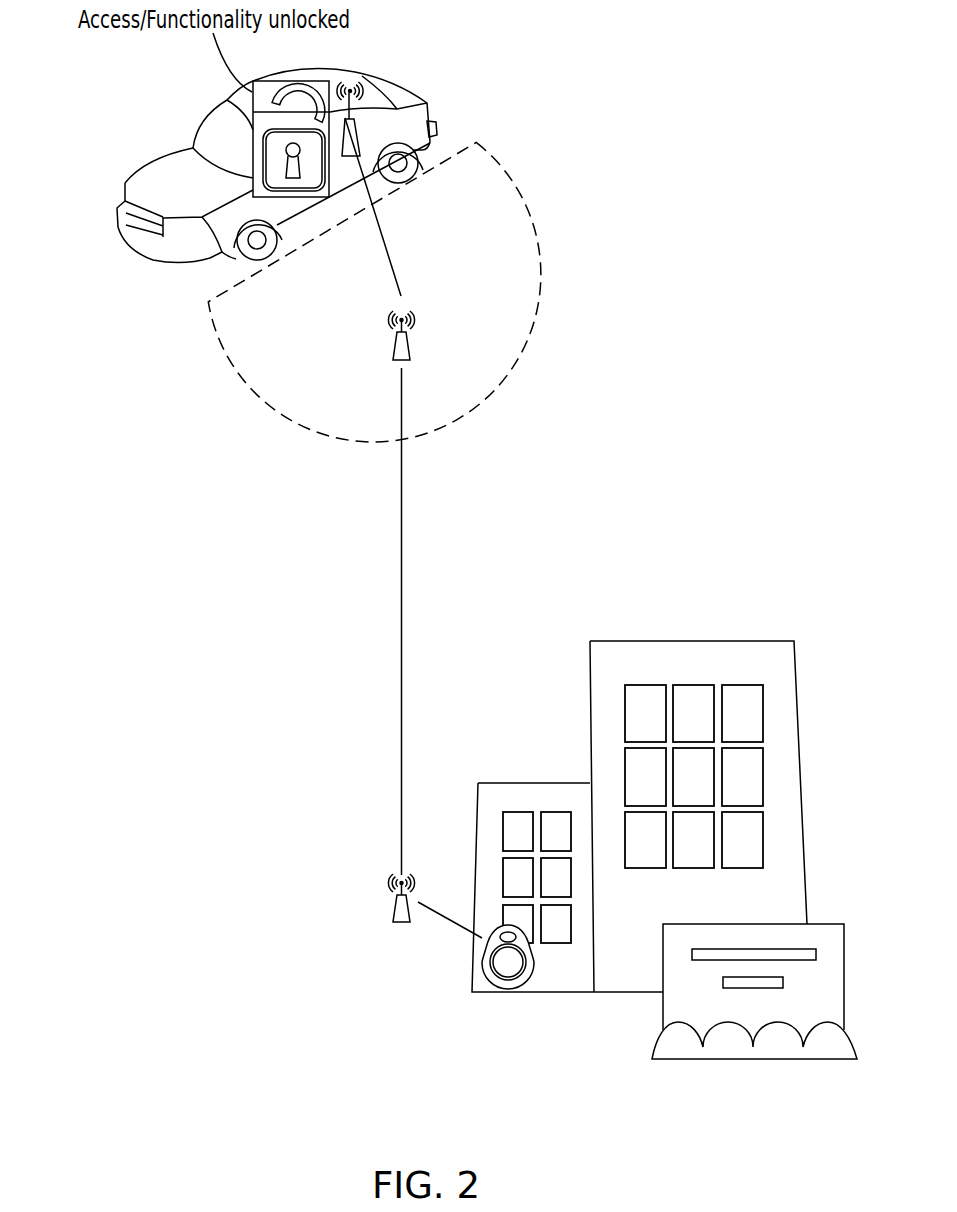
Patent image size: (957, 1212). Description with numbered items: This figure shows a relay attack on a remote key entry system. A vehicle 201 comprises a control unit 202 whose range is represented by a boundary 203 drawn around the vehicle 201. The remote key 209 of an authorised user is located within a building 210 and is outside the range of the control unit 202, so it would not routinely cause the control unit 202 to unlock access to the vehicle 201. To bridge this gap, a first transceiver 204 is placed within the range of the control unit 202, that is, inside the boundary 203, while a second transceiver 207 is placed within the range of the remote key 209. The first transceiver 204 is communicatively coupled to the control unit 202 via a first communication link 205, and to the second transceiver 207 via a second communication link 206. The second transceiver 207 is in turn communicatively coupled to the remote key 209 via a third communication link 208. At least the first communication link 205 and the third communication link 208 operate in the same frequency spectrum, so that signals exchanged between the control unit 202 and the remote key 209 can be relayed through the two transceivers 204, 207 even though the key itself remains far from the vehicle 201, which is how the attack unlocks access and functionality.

The vehicle 201 is at (143, 165).
The control unit 202 is at (366, 134).
The boundary 203 is at (528, 197).
The first transceiver 204 is at (377, 343).
The first communication link 205 is at (398, 247).
The second communication link 206 is at (398, 607).
The second transceiver 207 is at (383, 917).
The third communication link 208 is at (443, 928).
The remote key 209 is at (475, 992).
The building 210 is at (583, 994).